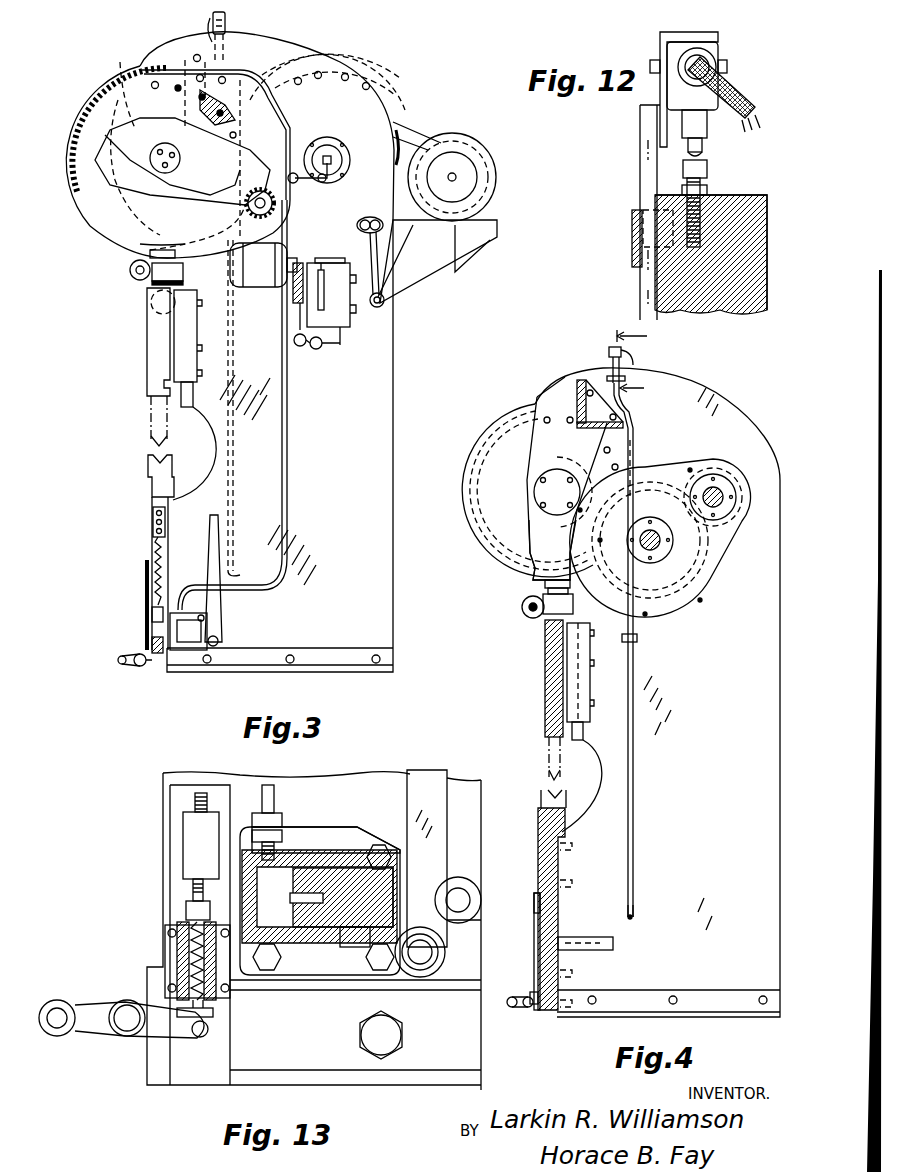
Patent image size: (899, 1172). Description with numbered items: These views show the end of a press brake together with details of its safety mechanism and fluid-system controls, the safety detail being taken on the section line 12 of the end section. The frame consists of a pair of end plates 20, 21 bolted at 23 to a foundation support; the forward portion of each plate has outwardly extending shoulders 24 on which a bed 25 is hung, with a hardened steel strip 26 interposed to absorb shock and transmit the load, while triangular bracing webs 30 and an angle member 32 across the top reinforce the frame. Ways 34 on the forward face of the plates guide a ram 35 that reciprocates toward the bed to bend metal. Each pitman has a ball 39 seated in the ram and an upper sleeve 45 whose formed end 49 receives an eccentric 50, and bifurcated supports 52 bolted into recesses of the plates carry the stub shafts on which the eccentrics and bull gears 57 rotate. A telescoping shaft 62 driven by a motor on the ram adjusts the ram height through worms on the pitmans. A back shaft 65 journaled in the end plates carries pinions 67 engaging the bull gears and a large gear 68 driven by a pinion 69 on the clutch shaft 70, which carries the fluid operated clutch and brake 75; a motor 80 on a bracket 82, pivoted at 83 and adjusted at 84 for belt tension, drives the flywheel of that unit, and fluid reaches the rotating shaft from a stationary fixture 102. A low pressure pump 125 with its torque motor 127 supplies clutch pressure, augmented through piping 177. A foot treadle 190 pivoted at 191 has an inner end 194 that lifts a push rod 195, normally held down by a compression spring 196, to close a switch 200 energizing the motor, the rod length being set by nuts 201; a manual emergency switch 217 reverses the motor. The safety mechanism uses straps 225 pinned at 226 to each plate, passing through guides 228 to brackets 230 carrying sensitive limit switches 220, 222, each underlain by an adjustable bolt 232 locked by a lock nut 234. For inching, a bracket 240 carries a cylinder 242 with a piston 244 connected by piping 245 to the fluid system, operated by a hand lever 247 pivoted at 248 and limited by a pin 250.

In FIG. 4, the section line 12 is at (643, 364).
In FIG. 3, the end plate 20 is at (365, 498).
In FIG. 12, the end plate 20 is at (765, 243).
In FIG. 13, the end plate 20 is at (483, 815).
In FIG. 12, the end plate 21 is at (734, 252).
In FIG. 4, the end plate 21 is at (746, 740).
In FIG. 3, the bolts 23 is at (375, 655).
In FIG. 13, the bolts 23 is at (402, 1040).
In FIG. 3, the outwardly extending shoulders 24 is at (150, 575).
In FIG. 4, the outwardly extending shoulders 24 is at (536, 945).
In FIG. 4, the bed 25 is at (540, 870).
In FIG. 4, the hardened steel strip 26 is at (536, 903).
In FIG. 4, the bracing webs 30 is at (590, 937).
In FIG. 3, the angle member 32 is at (182, 60).
In FIG. 4, the angle member 32 is at (576, 392).
In FIG. 3, the ways 34 is at (185, 345).
In FIG. 4, the ways 34 is at (582, 686).
In FIG. 3, the ram 35 is at (158, 372).
In FIG. 4, the ram 35 is at (545, 680).
In FIG. 3, the ball 39 is at (152, 305).
In FIG. 3, the upper sleeve 45 is at (148, 255).
In FIG. 4, the upper sleeve 45 is at (536, 532).
In FIG. 4, the upper end of sleeve 49 is at (528, 476).
In FIG. 3, the eccentric 50 is at (182, 146).
In FIG. 3, the bifurcated supports 52 is at (242, 130).
In FIG. 4, the bifurcated supports 52 is at (537, 445).
In FIG. 3, the bull gear 57 is at (98, 92).
In FIG. 4, the bull gear 57 is at (464, 499).
In FIG. 3, the telescoping shaft 62 is at (132, 273).
In FIG. 4, the telescoping shaft 62 is at (522, 607).
In FIG. 4, the back shaft 65 is at (650, 528).
In FIG. 3, the pinions 67 is at (264, 190).
In FIG. 4, the pinions 67 is at (647, 562).
In FIG. 4, the large gear 68 is at (702, 588).
In FIG. 4, the pinion 69 is at (722, 520).
In FIG. 4, the clutch shaft 70 is at (718, 492).
In FIG. 3, the fluid operated clutch and brake 75 is at (405, 125).
In FIG. 3, the motor 80 is at (462, 134).
In FIG. 3, the bracket 82 is at (428, 272).
In FIG. 3, the pivot 83 is at (385, 302).
In FIG. 3, the adjustment 84 is at (362, 222).
In FIG. 3, the stationary fixture 102 is at (333, 180).
In FIG. 3, the low pressure pump 125 is at (338, 292).
In FIG. 3, the electric torque motor 127 is at (255, 283).
In FIG. 3, the piping 177 is at (328, 137).
In FIG. 3, the foot treadle 190 is at (118, 660).
In FIG. 4, the foot treadle 190 is at (513, 1008).
In FIG. 13, the foot treadle 190 is at (55, 1000).
In FIG. 4, the pivot 191 is at (531, 996).
In FIG. 13, the pivot 191 is at (126, 1036).
In FIG. 13, the inner end of treadle 194 is at (196, 1038).
In FIG. 13, the push rod 195 is at (183, 950).
In FIG. 13, the compression spring 196 is at (185, 965).
In FIG. 3, the switch 200 is at (152, 612).
In FIG. 13, the switch 200 is at (183, 830).
In FIG. 13, the nuts 201 is at (190, 903).
In FIG. 3, the manual emergency switch 217 is at (153, 516).
In FIG. 3, the safety switch 220 is at (226, 20).
In FIG. 12, the safety switch 220 is at (720, 52).
In FIG. 12, the safety switch 222 is at (734, 87).
In FIG. 4, the safety switch 222 is at (608, 351).
In FIG. 3, the strap 225 is at (236, 472).
In FIG. 12, the strap 225 is at (640, 300).
In FIG. 4, the strap 225 is at (637, 437).
In FIG. 3, the pin 226 is at (239, 573).
In FIG. 4, the pin 226 is at (633, 917).
In FIG. 12, the guides 228 is at (634, 222).
In FIG. 4, the guides 228 is at (637, 637).
In FIG. 12, the bracket 230 is at (660, 45).
In FIG. 12, the bolt 232 is at (709, 170).
In FIG. 12, the lock nut 234 is at (710, 192).
In FIG. 13, the bracket 240 is at (333, 828).
In FIG. 3, the cylinder 242 is at (186, 650).
In FIG. 13, the cylinder 242 is at (300, 955).
In FIG. 13, the piston 244 is at (348, 868).
In FIG. 3, the piping 245 is at (288, 405).
In FIG. 13, the piping 245 is at (276, 790).
In FIG. 3, the hand lever 247 is at (220, 607).
In FIG. 13, the hand lever 247 is at (447, 775).
In FIG. 13, the pivot 248 is at (420, 964).
In FIG. 13, the pin 250 is at (458, 888).